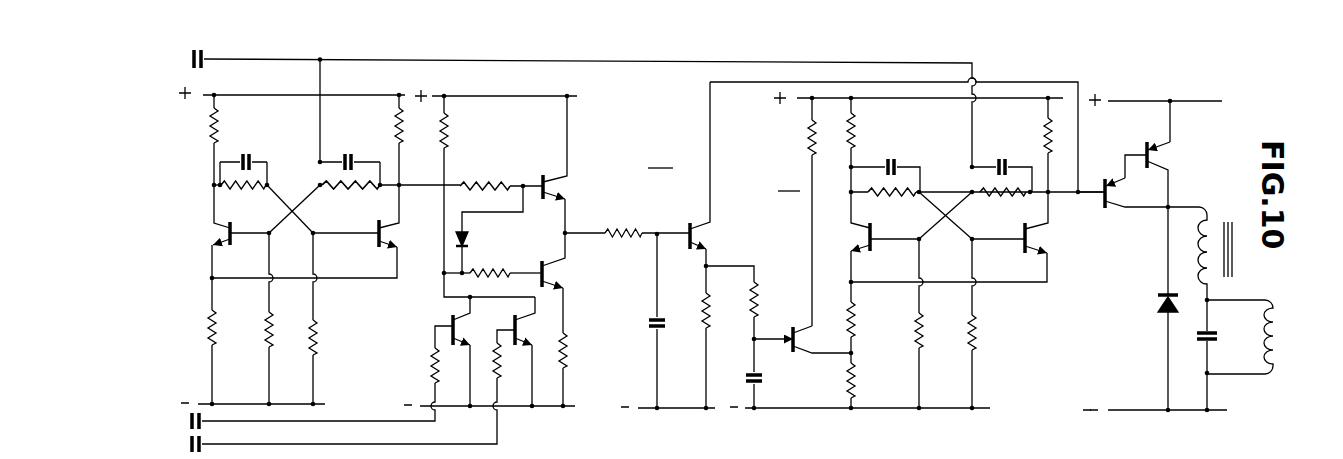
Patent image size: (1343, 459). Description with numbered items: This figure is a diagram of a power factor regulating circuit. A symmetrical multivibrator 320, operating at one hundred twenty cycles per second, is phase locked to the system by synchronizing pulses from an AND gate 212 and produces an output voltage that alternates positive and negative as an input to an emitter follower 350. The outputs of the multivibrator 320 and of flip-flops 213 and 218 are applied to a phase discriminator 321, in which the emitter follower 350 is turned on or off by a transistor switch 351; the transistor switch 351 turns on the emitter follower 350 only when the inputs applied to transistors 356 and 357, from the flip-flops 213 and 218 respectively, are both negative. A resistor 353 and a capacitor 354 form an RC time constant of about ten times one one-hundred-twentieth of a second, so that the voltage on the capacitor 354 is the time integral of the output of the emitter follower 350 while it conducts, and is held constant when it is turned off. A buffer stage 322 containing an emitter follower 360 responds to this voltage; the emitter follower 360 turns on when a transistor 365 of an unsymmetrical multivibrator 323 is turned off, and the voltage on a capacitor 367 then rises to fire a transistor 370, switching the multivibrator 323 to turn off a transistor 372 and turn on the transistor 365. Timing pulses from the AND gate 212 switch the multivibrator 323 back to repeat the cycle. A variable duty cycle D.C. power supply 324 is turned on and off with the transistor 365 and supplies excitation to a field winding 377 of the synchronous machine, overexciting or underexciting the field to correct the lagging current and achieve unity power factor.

The AND gate 212 is at (190, 59).
The flip-flop 213 is at (189, 421).
The flip-flop 218 is at (189, 444).
The symmetrical multivibrator 320 is at (430, 43).
The phase discriminator 321 is at (583, 45).
The buffer stage 322 is at (732, 46).
The unsymmetrical multivibrator 323 is at (1102, 46).
The variable duty cycle D.C. power supply 324 is at (1225, 48).
The emitter follower 350 is at (537, 176).
The transistor switch 351 is at (541, 263).
The resistor 353 is at (616, 208).
The capacitor 354 is at (669, 333).
The transistor 356 is at (450, 326).
The transistor 357 is at (521, 354).
The emitter follower 360 is at (686, 247).
The transistor 365 is at (1031, 256).
The capacitor 367 is at (743, 375).
The transistor 370 is at (795, 353).
The transistor 372 is at (880, 247).
The field winding 377 is at (1284, 353).